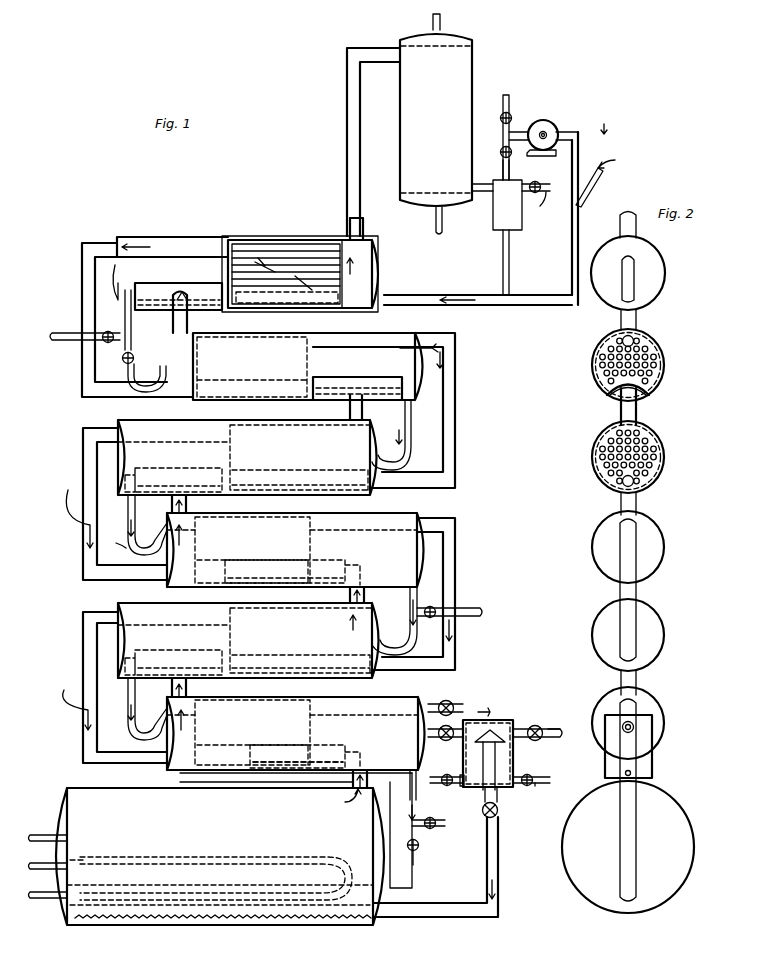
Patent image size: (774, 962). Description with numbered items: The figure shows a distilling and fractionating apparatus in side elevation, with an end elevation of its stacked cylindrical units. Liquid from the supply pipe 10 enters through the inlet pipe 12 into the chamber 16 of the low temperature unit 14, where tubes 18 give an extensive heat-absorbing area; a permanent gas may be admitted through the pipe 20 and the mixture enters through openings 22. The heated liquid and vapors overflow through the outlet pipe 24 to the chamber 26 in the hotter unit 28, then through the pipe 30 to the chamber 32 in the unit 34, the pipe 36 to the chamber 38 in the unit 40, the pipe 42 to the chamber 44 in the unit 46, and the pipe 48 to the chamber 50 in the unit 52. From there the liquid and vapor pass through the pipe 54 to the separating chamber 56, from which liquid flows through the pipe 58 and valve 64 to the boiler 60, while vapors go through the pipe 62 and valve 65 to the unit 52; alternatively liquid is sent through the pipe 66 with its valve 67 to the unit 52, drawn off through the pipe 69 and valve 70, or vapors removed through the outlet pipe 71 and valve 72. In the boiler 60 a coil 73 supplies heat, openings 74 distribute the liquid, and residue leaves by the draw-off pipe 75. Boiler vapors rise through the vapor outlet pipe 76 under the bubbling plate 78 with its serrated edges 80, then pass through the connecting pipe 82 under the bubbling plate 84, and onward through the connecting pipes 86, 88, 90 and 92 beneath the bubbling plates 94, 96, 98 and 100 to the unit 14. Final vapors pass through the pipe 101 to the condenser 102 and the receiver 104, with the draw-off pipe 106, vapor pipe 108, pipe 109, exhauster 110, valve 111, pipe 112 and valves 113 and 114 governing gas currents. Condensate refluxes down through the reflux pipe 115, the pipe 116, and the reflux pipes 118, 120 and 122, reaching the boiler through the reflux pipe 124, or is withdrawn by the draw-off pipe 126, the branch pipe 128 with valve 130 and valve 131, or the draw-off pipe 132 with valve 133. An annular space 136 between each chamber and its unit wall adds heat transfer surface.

In FIG. 1, the supply pipe 10 is at (590, 185).
In FIG. 1, the inlet pipe 12 is at (502, 306).
In FIG. 1, the low temperature unit 14 is at (373, 260).
In FIG. 2, the low temperature unit 14 is at (667, 274).
In FIG. 1, the chamber 16 is at (352, 234).
In FIG. 1, the tubes 18 is at (266, 247).
In FIG. 1, the pipe 20 is at (580, 158).
In FIG. 1, the openings 22 is at (340, 300).
In FIG. 1, the outlet pipe 24 is at (154, 238).
In FIG. 1, the chamber 26 is at (308, 366).
In FIG. 2, the chamber 26 is at (655, 370).
In FIG. 1, the unit 28 is at (396, 336).
In FIG. 1, the pipe 30 is at (456, 388).
In FIG. 1, the chamber 32 is at (256, 430).
In FIG. 1, the unit 34 is at (153, 420).
In FIG. 2, the unit 34 is at (665, 443).
In FIG. 1, the pipe 36 is at (83, 466).
In FIG. 1, the chamber 38 is at (252, 520).
In FIG. 1, the unit 40 is at (372, 516).
In FIG. 2, the unit 40 is at (665, 544).
In FIG. 1, the pipe 42 is at (456, 560).
In FIG. 2, the pipe 42 is at (620, 592).
In FIG. 1, the chamber 44 is at (273, 612).
In FIG. 1, the unit 46 is at (158, 604).
In FIG. 2, the unit 46 is at (665, 636).
In FIG. 1, the pipe 48 is at (83, 646).
In FIG. 1, the chamber 50 is at (252, 704).
In FIG. 1, the unit 52 is at (370, 700).
In FIG. 2, the unit 52 is at (666, 726).
In FIG. 1, the pipe 54 is at (456, 702).
In FIG. 1, the separating chamber 56 is at (514, 756).
In FIG. 2, the separating chamber 56 is at (653, 764).
In FIG. 1, the pipe 58 is at (494, 862).
In FIG. 1, the boiler 60 is at (220, 856).
In FIG. 2, the boiler 60 is at (696, 848).
In FIG. 1, the pipe 62 is at (420, 752).
In FIG. 1, the valve 64 is at (498, 808).
In FIG. 1, the valve 65 is at (448, 742).
In FIG. 1, the pipe 66 is at (462, 786).
In FIG. 1, the valve 67 is at (440, 784).
In FIG. 1, the pipe 69 is at (534, 778).
In FIG. 1, the valve 70 is at (530, 784).
In FIG. 1, the outlet pipe 71 is at (546, 726).
In FIG. 1, the valve 72 is at (536, 724).
In FIG. 1, the coil 73 is at (262, 862).
In FIG. 1, the openings 74 is at (305, 924).
In FIG. 1, the draw-off pipe 75 is at (38, 832).
In FIG. 1, the vapor outlet pipe 76 is at (368, 784).
In FIG. 1, the bubbling plate 78 is at (355, 746).
In FIG. 1, the serrated edges 80 is at (340, 755).
In FIG. 1, the connecting pipe 82 is at (187, 693).
In FIG. 1, the bubbling plate 84 is at (153, 652).
In FIG. 1, the connecting pipe 86 is at (349, 597).
In FIG. 1, the connecting pipe 88 is at (187, 509).
In FIG. 1, the connecting pipe 90 is at (349, 412).
In FIG. 2, the connecting pipe 90 is at (638, 410).
In FIG. 1, the connecting pipe 92 is at (190, 322).
In FIG. 2, the connecting pipe 92 is at (638, 318).
In FIG. 1, the bubbling plate 94 is at (331, 566).
In FIG. 1, the bubbling plate 96 is at (148, 474).
In FIG. 1, the bubbling plate 98 is at (336, 380).
In FIG. 2, the bubbling plate 98 is at (652, 388).
In FIG. 1, the bubbling plate 100 is at (155, 290).
In FIG. 1, the pipe 101 is at (346, 158).
In FIG. 2, the pipe 101 is at (638, 230).
In FIG. 1, the condenser 102 is at (436, 124).
In FIG. 1, the receiver 104 is at (493, 218).
In FIG. 1, the draw-off pipe 106 is at (502, 245).
In FIG. 1, the vapor pipe 108 is at (552, 204).
In FIG. 1, the pipe 109 is at (501, 163).
In FIG. 1, the exhauster 110 is at (547, 120).
In FIG. 1, the valve 111 is at (501, 150).
In FIG. 1, the pipe 112 is at (501, 104).
In FIG. 1, the valve 113 is at (529, 185).
In FIG. 1, the valve 114 is at (510, 115).
In FIG. 1, the reflux pipe 115 is at (132, 323).
In FIG. 1, the pipe 116 is at (404, 416).
In FIG. 1, the reflux pipe 118 is at (133, 510).
In FIG. 1, the reflux pipe 120 is at (409, 597).
In FIG. 1, the reflux pipe 122 is at (133, 694).
In FIG. 1, the reflux pipe 124 is at (413, 888).
In FIG. 1, the draw-off pipe 126 is at (62, 344).
In FIG. 1, the branch pipe 128 is at (436, 828).
In FIG. 1, the valve 130 is at (421, 846).
In FIG. 1, the valve 131 is at (416, 860).
In FIG. 1, the draw-off pipe 132 is at (470, 618).
In FIG. 1, the valve 133 is at (438, 606).
In FIG. 1, the annular space 136 is at (202, 240).
In FIG. 2, the annular space 136 is at (663, 358).